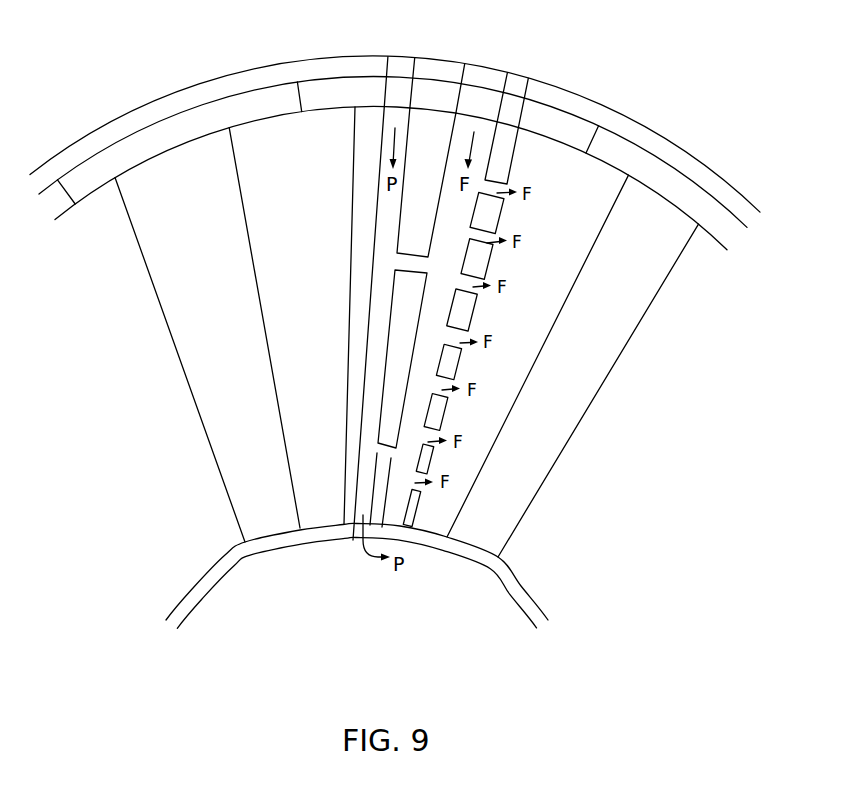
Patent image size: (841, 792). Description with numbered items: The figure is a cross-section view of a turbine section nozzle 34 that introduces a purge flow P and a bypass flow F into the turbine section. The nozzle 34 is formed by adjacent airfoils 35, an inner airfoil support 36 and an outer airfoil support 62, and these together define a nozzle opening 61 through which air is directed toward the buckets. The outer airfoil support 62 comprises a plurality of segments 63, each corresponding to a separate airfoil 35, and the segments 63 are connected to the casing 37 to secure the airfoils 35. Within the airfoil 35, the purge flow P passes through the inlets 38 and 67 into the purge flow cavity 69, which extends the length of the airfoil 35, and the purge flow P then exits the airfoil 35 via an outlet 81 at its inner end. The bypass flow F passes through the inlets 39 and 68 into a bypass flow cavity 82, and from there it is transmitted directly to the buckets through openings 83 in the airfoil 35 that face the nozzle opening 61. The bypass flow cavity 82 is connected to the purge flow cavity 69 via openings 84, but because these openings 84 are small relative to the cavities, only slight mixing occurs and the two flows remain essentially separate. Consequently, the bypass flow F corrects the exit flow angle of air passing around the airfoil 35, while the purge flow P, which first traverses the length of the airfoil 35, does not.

The nozzle 34 is at (520, 342).
The airfoil 35 is at (358, 338).
The inner airfoil support 36 is at (513, 578).
The casing 37 is at (692, 170).
The inlet 38 is at (402, 62).
The inlet 39 is at (490, 72).
The nozzle opening 61 is at (521, 270).
The outer airfoil support 62 is at (293, 126).
The segment 63 is at (332, 90).
The inlet 67 is at (406, 116).
The inlet 68 is at (491, 120).
The purge flow cavity 69 is at (386, 228).
The outlet 81 is at (352, 543).
The bypass flow cavity 82 is at (454, 208).
The opening 83 is at (497, 184).
The opening 84 is at (372, 452).